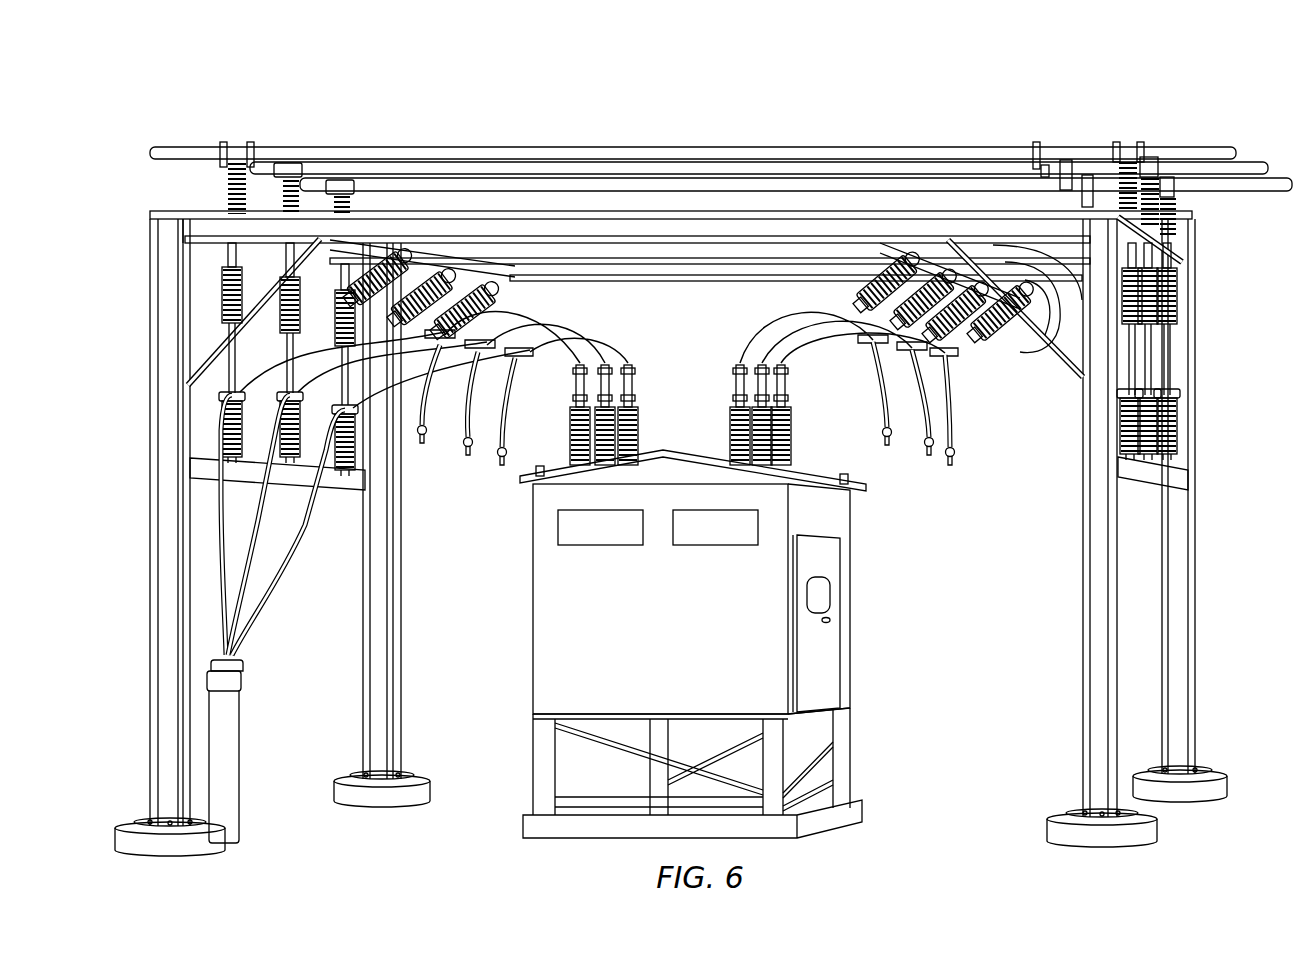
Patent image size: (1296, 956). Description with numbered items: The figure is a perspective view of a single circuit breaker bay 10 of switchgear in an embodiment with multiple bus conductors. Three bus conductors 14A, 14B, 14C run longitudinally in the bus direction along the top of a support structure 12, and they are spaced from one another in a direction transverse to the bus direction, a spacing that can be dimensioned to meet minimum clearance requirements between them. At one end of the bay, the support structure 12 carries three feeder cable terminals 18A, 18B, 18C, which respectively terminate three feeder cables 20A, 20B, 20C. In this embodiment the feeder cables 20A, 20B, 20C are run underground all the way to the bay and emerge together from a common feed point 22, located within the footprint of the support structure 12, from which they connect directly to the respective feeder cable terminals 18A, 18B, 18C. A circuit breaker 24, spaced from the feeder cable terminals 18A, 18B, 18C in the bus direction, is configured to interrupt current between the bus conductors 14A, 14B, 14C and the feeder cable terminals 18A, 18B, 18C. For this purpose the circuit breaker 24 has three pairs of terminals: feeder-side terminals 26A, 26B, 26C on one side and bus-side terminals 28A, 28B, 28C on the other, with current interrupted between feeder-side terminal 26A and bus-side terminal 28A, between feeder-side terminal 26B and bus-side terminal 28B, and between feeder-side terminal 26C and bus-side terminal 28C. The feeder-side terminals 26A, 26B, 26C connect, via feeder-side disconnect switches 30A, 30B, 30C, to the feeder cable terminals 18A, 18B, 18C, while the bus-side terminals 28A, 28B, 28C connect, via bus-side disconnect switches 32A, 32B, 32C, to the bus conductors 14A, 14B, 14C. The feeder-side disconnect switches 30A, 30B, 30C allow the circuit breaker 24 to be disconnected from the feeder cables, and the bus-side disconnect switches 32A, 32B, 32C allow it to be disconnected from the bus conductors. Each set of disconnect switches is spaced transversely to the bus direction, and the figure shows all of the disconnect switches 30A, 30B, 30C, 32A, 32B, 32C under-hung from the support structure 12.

The circuit breaker bay 10 is at (224, 134).
The support structure 12 is at (151, 272).
The bus conductor 14A is at (1187, 147).
The bus conductor 14B is at (1263, 163).
The bus conductor 14C is at (1292, 175).
The feeder cable terminal 18A is at (228, 396).
The feeder cable terminal 18B is at (288, 394).
The feeder cable terminal 18C is at (345, 478).
The feeder cable 20A is at (212, 567).
The feeder cable 20B is at (243, 540).
The feeder cable 20C is at (293, 545).
The feed point 22 is at (256, 833).
The circuit breaker 24 is at (876, 631).
The feeder-side terminal 26A is at (568, 410).
The feeder-side terminal 26B is at (640, 408).
The feeder-side terminal 26C is at (633, 400).
The bus-side terminal 28A is at (735, 407).
The bus-side terminal 28B is at (792, 415).
The bus-side terminal 28C is at (790, 398).
The feeder-side disconnect switch 30A is at (420, 464).
The feeder-side disconnect switch 30B is at (468, 476).
The feeder-side disconnect switch 30C is at (502, 485).
The bus-side disconnect switch 32A is at (885, 466).
The bus-side disconnect switch 32B is at (925, 476).
The bus-side disconnect switch 32C is at (950, 485).